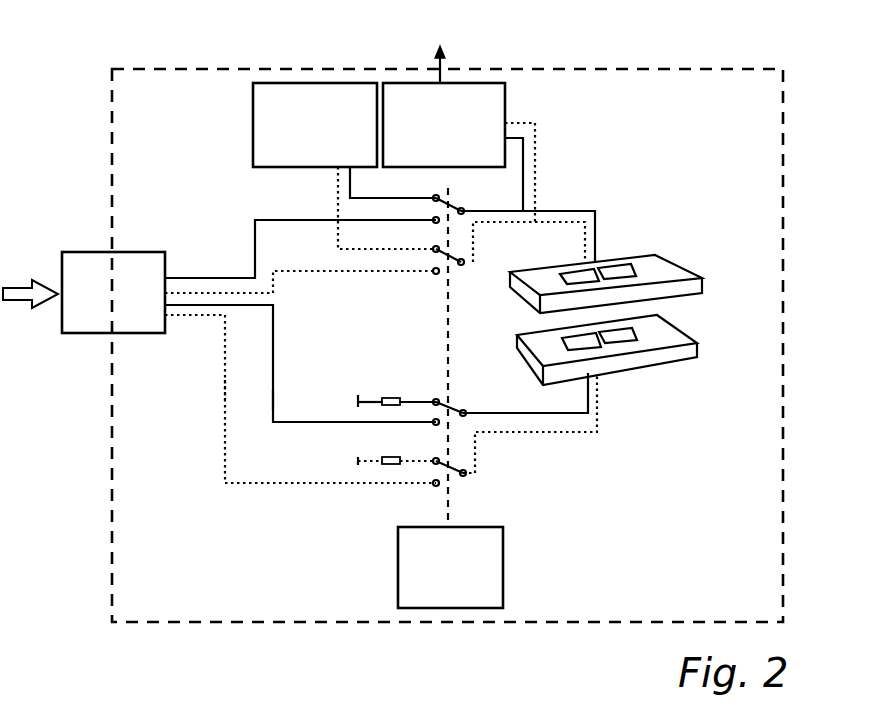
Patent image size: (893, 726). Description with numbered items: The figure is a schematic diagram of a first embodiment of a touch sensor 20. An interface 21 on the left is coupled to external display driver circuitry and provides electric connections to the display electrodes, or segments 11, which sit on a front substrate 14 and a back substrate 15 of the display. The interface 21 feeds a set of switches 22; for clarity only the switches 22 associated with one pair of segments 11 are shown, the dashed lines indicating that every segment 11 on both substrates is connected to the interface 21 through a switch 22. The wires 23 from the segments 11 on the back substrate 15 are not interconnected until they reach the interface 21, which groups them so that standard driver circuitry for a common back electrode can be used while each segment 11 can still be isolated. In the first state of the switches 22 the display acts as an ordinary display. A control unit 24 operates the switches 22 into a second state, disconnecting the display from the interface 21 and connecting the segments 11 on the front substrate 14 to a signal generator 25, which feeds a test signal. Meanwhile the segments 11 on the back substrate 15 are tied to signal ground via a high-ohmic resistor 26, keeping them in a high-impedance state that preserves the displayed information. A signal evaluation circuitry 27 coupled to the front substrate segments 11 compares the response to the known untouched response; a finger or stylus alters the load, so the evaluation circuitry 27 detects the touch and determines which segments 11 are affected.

The display electrodes (segments) 11 is at (634, 265).
The front substrate 14 is at (636, 257).
The back substrate 15 is at (667, 363).
The touch sensor 20 is at (148, 538).
The interface 21 is at (80, 327).
The switches 22 is at (447, 193).
The wires 23 is at (273, 400).
The control unit 24 is at (503, 568).
The signal generator 25 is at (253, 128).
The high-ohmic resistor 26 is at (388, 397).
The signal evaluation circuitry 27 is at (505, 98).